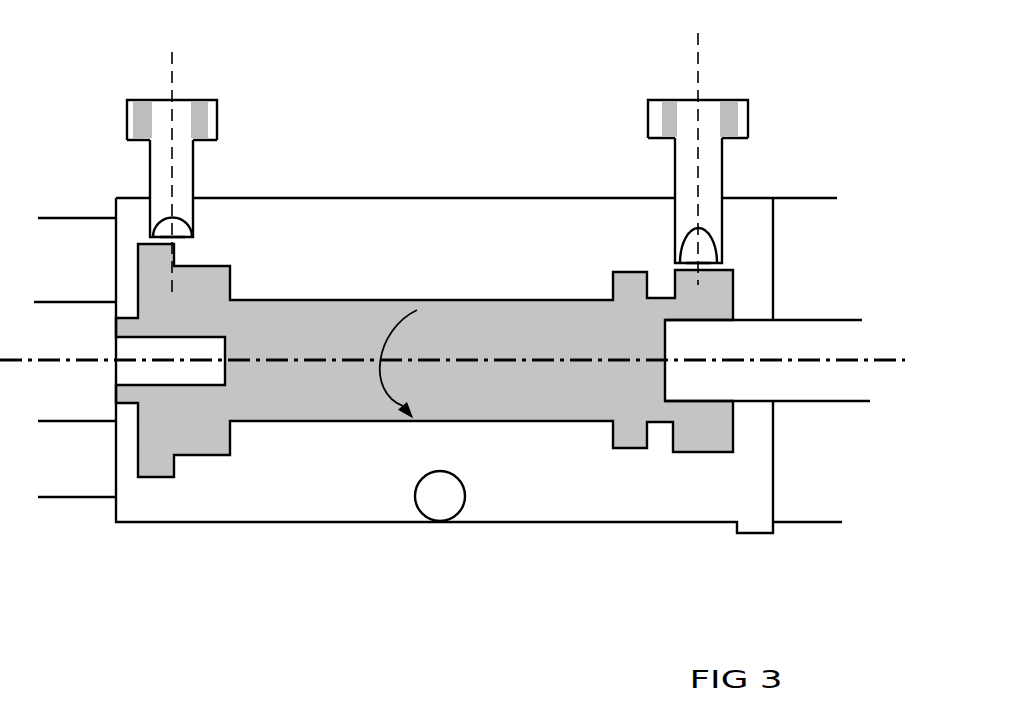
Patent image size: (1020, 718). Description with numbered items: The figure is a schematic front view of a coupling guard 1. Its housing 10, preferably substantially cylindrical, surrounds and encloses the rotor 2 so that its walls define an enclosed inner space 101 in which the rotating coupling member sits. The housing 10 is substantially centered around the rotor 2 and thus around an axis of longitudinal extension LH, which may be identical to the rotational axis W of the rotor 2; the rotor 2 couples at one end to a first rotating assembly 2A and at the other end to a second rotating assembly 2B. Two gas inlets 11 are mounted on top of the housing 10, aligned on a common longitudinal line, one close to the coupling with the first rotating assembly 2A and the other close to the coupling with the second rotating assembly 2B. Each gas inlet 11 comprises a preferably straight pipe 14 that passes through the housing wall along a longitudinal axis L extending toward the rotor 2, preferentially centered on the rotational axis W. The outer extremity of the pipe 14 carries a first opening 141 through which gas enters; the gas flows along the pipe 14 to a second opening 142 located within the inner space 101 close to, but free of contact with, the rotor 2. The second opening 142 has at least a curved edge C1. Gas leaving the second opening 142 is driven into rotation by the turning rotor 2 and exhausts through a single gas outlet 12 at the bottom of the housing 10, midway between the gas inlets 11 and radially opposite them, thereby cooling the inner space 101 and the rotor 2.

The coupling guard 1 is at (549, 118).
The rotor 2 is at (424, 360).
The first rotating assembly 2A is at (75, 357).
The second rotating assembly 2B is at (767, 360).
The housing 10 is at (363, 198).
The inner space 101 is at (479, 365).
The gas inlet 11 is at (107, 92).
The gas outlet 12 is at (415, 496).
The pipe 14 is at (193, 202).
The first opening 141 is at (172, 135).
The second opening 142 is at (173, 225).
The curved edge C1 is at (157, 220).
The longitudinal axis L is at (445, 162).
The rotational axis W is at (452, 345).
The axis of longitudinal extension LH is at (897, 384).